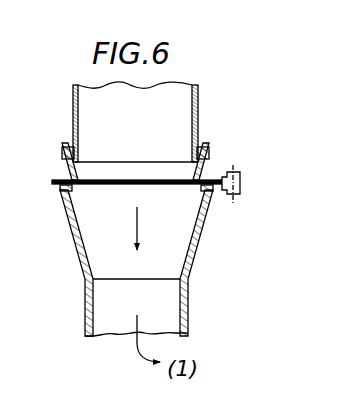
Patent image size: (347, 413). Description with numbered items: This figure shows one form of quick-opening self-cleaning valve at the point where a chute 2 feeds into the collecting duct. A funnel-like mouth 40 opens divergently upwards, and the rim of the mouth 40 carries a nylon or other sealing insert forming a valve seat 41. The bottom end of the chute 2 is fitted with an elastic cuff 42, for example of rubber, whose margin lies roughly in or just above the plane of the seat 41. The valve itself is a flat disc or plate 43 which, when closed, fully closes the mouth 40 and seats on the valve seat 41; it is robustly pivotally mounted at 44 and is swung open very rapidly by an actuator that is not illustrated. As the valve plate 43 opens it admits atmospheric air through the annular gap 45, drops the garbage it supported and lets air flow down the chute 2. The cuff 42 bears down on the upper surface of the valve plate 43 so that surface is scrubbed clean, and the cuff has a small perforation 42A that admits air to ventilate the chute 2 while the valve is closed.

The chute 2 is at (197, 92).
The perforation 42A is at (203, 143).
The elastic cuff 42 is at (64, 164).
The annular gap 45 is at (223, 156).
The valve plate 43 is at (95, 187).
The pivotal mounting 44 is at (235, 173).
The funnel-like mouth 40 is at (80, 258).
The valve seat 41 is at (205, 207).